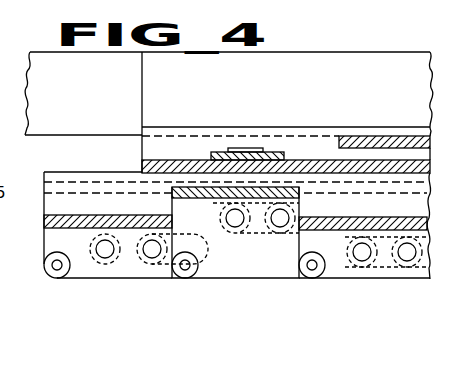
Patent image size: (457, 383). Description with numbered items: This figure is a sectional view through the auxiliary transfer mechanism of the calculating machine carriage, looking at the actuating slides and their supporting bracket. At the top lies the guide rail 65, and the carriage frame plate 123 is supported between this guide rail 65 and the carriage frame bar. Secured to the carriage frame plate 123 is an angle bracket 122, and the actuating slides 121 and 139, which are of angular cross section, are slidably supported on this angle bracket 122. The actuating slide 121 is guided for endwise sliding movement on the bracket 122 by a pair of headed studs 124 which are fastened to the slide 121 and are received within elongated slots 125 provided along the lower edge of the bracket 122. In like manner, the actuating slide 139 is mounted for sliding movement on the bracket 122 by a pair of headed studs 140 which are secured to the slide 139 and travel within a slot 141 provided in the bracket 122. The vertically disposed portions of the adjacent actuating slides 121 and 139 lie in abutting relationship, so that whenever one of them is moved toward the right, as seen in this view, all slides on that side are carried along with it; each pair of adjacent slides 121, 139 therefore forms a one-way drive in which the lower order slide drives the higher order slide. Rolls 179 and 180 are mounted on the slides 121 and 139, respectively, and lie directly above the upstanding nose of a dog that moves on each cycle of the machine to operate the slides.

The guide rail 65 is at (92, 100).
The carriage frame plate 123 is at (287, 100).
The angle bracket 122 is at (70, 203).
The actuating slide 121 is at (58, 244).
The headed studs 124 is at (148, 260).
The elongated slots 125 is at (194, 236).
The actuating slide 139 is at (263, 271).
The headed studs 140 is at (282, 236).
The slot 141 is at (331, 213).
The roll 179 is at (313, 280).
The roll 180 is at (183, 279).